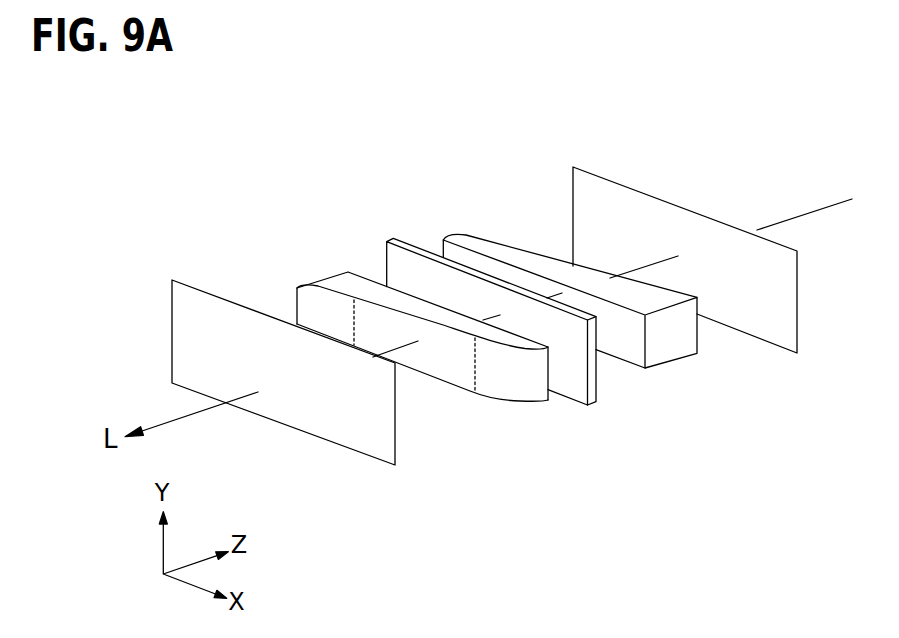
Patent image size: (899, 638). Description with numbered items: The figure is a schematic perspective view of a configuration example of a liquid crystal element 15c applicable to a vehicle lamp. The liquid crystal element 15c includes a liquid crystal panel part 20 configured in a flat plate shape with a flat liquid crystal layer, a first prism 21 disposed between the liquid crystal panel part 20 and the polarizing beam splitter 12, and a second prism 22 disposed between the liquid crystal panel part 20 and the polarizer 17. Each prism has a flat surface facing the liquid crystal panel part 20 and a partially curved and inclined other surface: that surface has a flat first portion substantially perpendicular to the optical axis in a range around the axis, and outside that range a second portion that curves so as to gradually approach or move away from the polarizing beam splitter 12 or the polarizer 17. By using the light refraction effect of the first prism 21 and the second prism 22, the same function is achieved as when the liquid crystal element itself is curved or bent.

The polarizer 17 is at (227, 299).
The liquid crystal element 15c is at (303, 148).
The second prism 22 is at (338, 280).
The liquid crystal panel part 20 is at (415, 245).
The first prism 21 is at (502, 246).
The polarizing beam splitter 12 is at (625, 187).